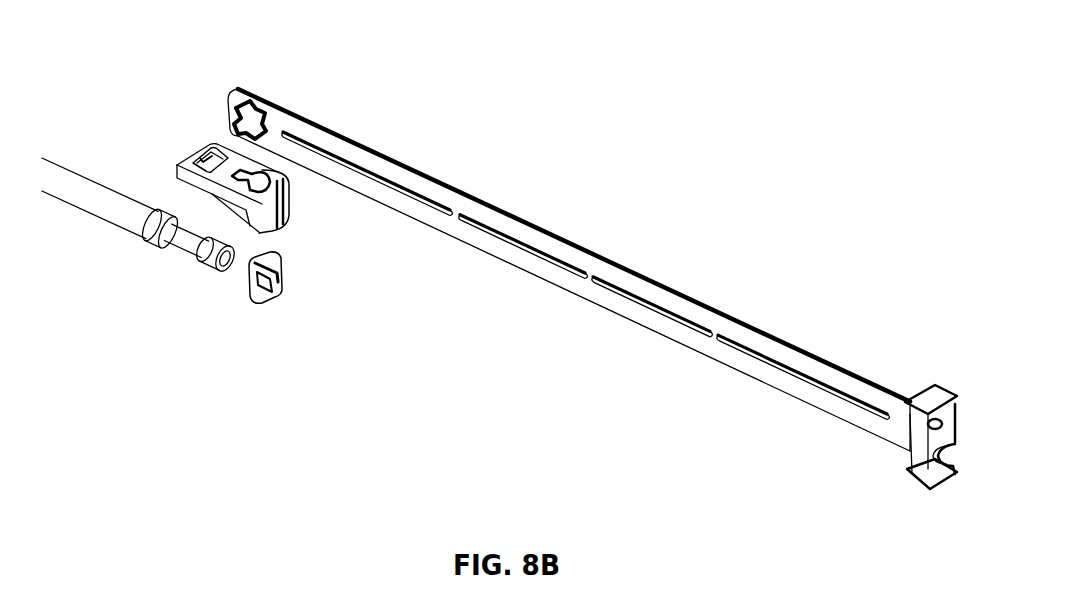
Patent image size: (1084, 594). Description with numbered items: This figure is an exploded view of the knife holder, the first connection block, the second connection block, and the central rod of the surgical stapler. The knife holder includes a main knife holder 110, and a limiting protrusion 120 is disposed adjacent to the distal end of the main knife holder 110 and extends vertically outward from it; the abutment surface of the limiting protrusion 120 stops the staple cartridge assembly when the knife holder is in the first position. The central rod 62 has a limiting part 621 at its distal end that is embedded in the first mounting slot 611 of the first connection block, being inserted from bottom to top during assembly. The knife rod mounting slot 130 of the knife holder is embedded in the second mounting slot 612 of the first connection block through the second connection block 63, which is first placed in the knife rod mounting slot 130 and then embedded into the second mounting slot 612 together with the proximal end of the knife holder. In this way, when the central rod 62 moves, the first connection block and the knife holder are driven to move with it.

The main knife holder 110 is at (445, 197).
The limiting protrusion 120 is at (930, 385).
The knife rod mounting slot 130 is at (248, 89).
The central rod 62 is at (93, 193).
The first mounting slot 611 is at (203, 150).
The second mounting slot 612 is at (292, 218).
The limiting part 621 is at (218, 277).
The second connection block 63 is at (285, 298).